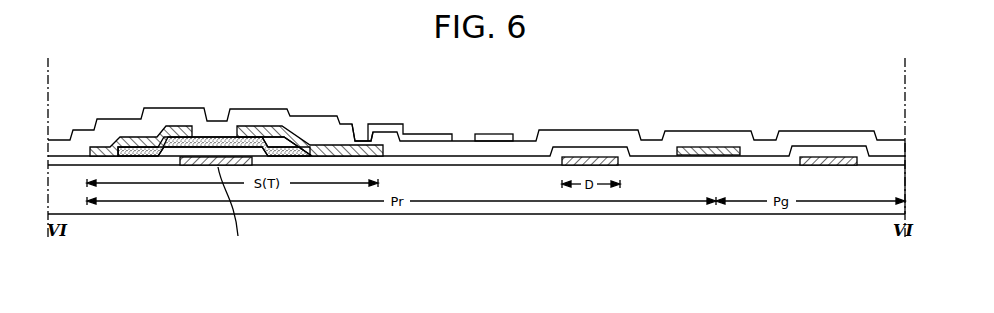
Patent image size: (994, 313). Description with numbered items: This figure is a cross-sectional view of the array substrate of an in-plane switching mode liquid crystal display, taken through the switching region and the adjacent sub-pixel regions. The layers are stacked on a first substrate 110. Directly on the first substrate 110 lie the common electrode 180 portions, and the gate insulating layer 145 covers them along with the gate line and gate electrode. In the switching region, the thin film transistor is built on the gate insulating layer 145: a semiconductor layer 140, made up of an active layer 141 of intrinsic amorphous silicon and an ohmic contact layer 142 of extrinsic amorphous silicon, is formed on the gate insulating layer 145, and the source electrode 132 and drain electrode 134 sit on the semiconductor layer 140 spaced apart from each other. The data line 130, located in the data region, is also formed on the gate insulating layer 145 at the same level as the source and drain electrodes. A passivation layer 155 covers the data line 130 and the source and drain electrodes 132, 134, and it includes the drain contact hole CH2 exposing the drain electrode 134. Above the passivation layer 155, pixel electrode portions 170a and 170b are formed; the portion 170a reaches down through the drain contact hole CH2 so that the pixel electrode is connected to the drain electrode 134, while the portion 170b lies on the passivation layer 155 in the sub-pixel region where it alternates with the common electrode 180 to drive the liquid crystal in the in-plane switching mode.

The first substrate 110 is at (884, 194).
The data line 130 is at (702, 150).
The source electrode 132 is at (168, 128).
The drain electrode 134 is at (263, 127).
The semiconductor layer 140 is at (297, 81).
The active layer 141 is at (303, 147).
The ohmic contact layer 142 is at (288, 134).
The gate insulating layer 145 is at (462, 158).
The passivation layer 155 is at (245, 114).
The pixel electrode first portion 170a is at (395, 127).
The pixel electrode second portion 170b is at (495, 133).
The common electrode 180 is at (590, 157).
The drain contact hole CH2 is at (361, 124).